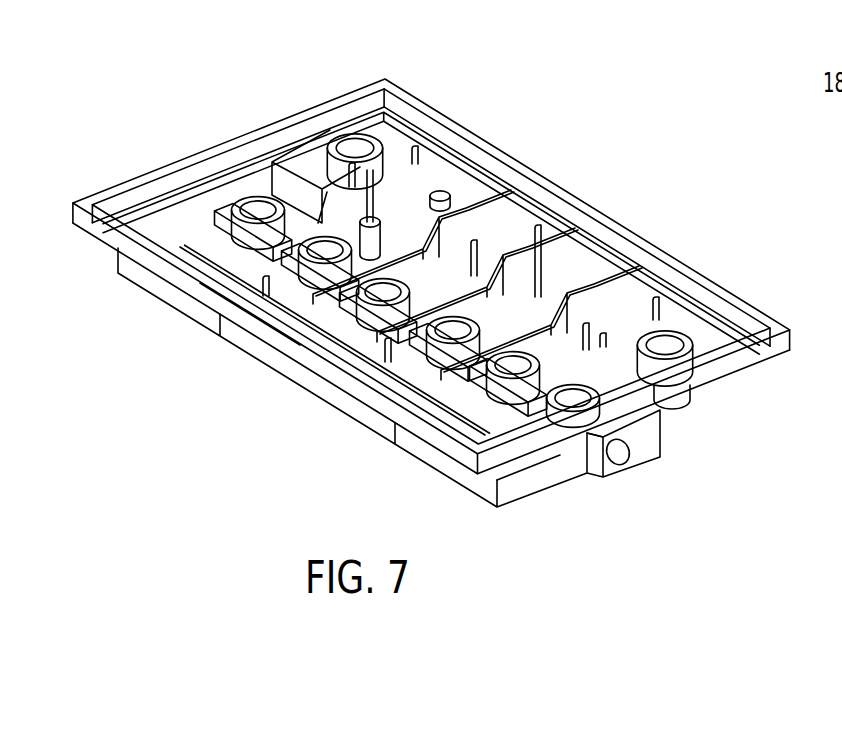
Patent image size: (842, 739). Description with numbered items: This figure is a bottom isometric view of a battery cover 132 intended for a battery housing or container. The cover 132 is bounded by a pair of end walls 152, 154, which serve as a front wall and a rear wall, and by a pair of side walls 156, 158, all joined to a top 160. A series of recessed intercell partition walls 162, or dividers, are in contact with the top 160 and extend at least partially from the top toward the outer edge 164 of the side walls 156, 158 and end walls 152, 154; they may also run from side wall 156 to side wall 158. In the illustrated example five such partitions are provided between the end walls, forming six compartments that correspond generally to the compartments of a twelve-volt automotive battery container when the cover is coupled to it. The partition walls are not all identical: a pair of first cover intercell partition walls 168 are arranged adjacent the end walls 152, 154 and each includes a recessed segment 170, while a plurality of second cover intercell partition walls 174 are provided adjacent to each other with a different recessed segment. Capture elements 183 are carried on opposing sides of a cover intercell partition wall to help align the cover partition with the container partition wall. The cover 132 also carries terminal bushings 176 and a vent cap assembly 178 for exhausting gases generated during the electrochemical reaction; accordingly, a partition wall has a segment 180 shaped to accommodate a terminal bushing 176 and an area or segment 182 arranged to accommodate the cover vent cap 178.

The end wall 152 is at (341, 74).
The cover 132 is at (660, 92).
The end wall 154 is at (756, 372).
The side wall 156 is at (668, 246).
The side wall 158 is at (274, 340).
The top 160 is at (470, 275).
The intercell partition wall 162 is at (473, 423).
The outer edge 164 is at (713, 283).
The first cover intercell partition wall 168 is at (222, 262).
The recessed segment 170 is at (557, 440).
The second cover intercell partition wall 174 is at (583, 305).
The terminal bushing 176 is at (373, 142).
The vent cap assembly 178 is at (243, 226).
The segment 180 is at (658, 408).
The segment 182 is at (622, 402).
The capture element 183 is at (430, 162).